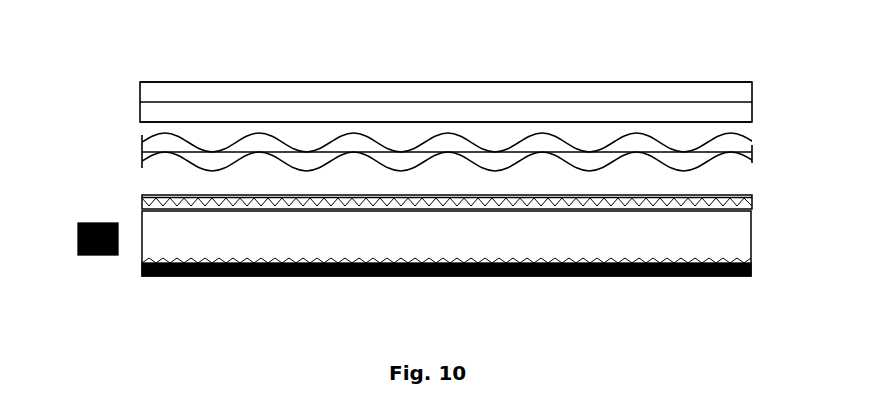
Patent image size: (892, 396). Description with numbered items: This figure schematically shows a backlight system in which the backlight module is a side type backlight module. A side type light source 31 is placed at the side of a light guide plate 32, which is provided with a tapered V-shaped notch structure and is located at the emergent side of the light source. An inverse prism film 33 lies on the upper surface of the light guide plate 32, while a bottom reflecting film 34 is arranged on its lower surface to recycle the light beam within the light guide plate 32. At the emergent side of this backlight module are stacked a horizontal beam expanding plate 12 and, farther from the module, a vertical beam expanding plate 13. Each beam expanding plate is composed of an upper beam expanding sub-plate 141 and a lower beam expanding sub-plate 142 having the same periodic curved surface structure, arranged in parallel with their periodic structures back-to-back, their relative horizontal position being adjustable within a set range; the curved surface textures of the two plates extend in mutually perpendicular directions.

The vertical beam expanding plate 13 is at (140, 82).
The upper beam expanding sub-plate 141 is at (423, 82).
The lower beam expanding sub-plate 142 is at (752, 118).
The horizontal beam expanding plate 12 is at (140, 133).
The inverse prism film 33 is at (717, 195).
The light guide plate 32 is at (282, 245).
The bottom reflecting film 34 is at (440, 273).
The side type light source 31 is at (82, 224).